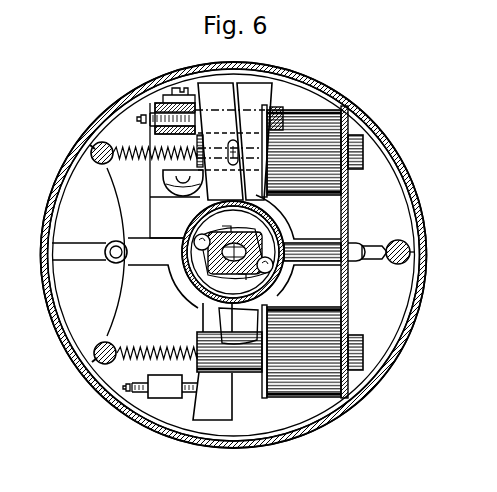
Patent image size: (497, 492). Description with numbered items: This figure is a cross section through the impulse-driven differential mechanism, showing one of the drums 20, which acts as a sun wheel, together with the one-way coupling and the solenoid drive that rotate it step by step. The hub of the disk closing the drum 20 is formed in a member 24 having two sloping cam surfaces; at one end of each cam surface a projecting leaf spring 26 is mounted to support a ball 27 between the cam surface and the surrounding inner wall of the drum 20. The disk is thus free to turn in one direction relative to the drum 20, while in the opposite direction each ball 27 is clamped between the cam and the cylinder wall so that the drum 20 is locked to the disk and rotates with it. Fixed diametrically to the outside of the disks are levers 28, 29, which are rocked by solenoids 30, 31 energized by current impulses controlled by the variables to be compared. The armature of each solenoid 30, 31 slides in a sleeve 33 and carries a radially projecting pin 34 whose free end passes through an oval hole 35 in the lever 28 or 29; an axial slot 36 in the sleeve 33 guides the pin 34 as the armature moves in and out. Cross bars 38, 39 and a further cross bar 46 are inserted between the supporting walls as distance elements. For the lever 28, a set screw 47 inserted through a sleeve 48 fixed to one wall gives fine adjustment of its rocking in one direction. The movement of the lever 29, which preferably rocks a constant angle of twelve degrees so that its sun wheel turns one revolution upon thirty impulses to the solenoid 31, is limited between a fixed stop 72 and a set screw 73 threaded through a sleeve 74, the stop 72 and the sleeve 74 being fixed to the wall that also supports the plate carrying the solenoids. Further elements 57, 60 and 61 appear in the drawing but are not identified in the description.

The drum 20 is at (184, 272).
The member 24 is at (266, 240).
The projecting leaf spring 26 is at (201, 221).
The ball 27 is at (196, 246).
The lever 28 is at (278, 72).
The lever 29 is at (213, 95).
The solenoid 30 is at (297, 378).
The solenoid 31 is at (328, 133).
The sleeve 33 is at (358, 152).
The pin 34 is at (183, 181).
The oval hole 35 is at (203, 177).
The axial slot 36 is at (197, 148).
The cross bar 38 is at (92, 148).
The cross bar 39 is at (100, 363).
The cross bar 46 is at (412, 248).
The set screw 47 is at (127, 398).
The sleeve 48 is at (166, 400).
The link 57 is at (383, 240).
The bar 60 is at (75, 253).
The arc member 61 is at (110, 328).
The fixed stop 72 is at (283, 120).
The set screw 73 is at (138, 120).
The sleeve 74 is at (160, 105).